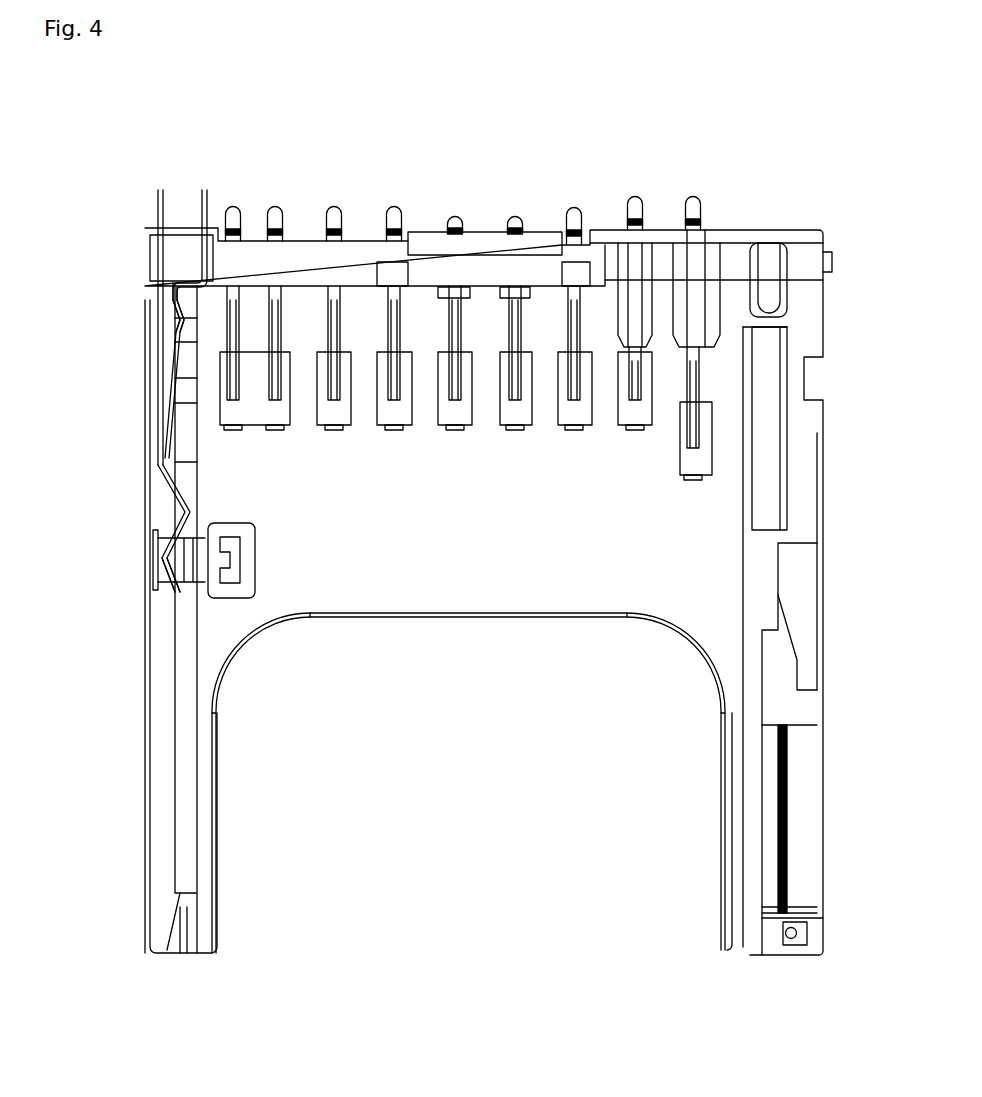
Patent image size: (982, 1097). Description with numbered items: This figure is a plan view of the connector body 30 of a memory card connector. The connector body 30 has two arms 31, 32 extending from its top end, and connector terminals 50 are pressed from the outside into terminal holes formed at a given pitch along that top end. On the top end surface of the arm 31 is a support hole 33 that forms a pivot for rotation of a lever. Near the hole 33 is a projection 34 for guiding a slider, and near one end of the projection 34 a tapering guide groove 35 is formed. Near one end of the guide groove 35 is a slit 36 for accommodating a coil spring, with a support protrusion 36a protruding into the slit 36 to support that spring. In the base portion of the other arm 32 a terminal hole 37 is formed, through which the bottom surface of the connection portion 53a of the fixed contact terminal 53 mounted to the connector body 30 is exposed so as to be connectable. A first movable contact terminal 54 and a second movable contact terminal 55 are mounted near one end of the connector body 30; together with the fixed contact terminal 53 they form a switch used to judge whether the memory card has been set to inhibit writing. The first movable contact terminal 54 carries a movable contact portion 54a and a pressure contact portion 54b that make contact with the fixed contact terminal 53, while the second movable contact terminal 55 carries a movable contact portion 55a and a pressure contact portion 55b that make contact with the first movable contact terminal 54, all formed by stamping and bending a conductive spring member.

The connector body 30 is at (497, 575).
The arm 31 is at (805, 708).
The arm 32 is at (163, 818).
The support hole 33 is at (797, 933).
The projection 34 is at (788, 825).
The guide groove 35 is at (790, 638).
The slit 36 is at (768, 388).
The support protrusion 36a is at (770, 288).
The terminal hole 37 is at (255, 535).
The connector terminal 50 is at (273, 212).
The fixed contact terminal 53 is at (183, 562).
The connection portion 53a is at (232, 560).
The first movable contact terminal 54 is at (158, 185).
The movable contact portion 54a is at (183, 552).
The pressure contact portion 54b is at (178, 512).
The second movable contact terminal 55 is at (205, 185).
The movable contact portion 55a is at (173, 302).
The pressure contact portion 55b is at (176, 326).